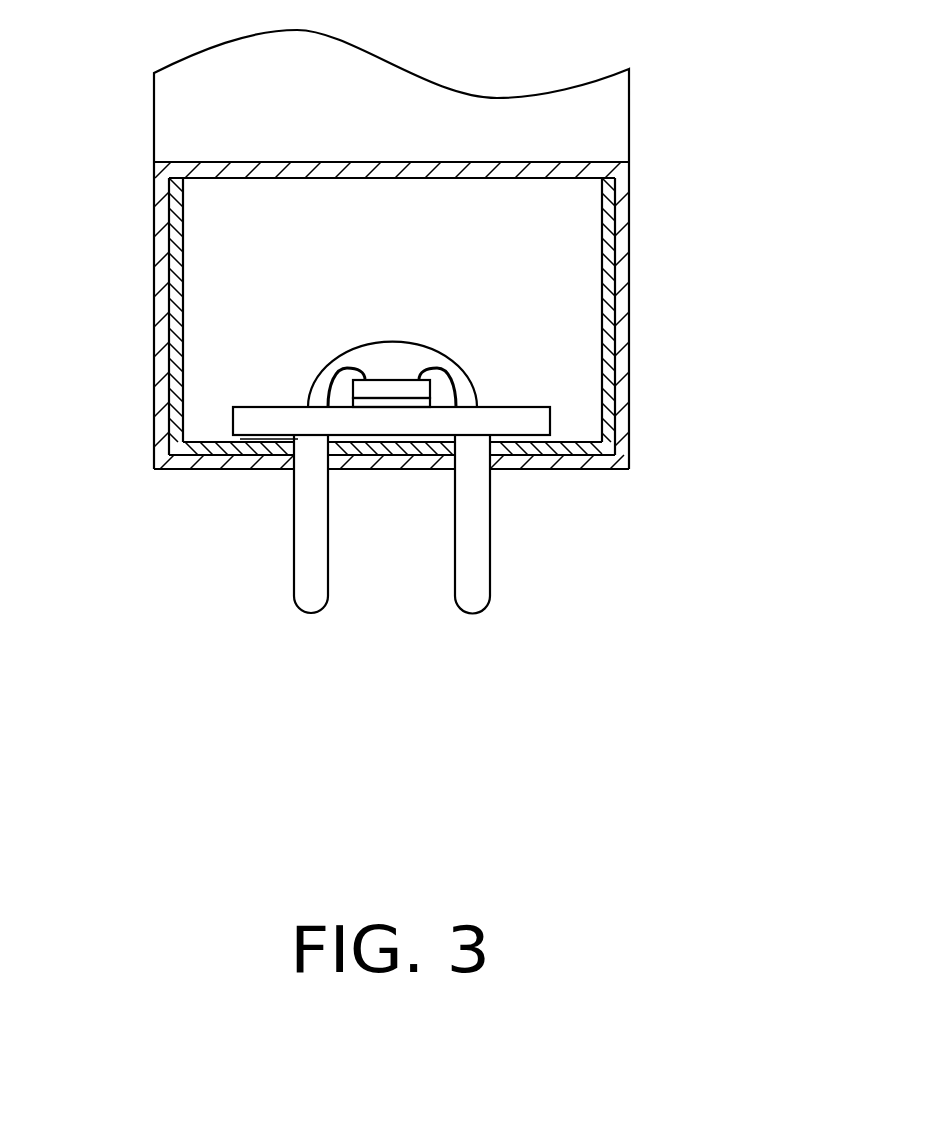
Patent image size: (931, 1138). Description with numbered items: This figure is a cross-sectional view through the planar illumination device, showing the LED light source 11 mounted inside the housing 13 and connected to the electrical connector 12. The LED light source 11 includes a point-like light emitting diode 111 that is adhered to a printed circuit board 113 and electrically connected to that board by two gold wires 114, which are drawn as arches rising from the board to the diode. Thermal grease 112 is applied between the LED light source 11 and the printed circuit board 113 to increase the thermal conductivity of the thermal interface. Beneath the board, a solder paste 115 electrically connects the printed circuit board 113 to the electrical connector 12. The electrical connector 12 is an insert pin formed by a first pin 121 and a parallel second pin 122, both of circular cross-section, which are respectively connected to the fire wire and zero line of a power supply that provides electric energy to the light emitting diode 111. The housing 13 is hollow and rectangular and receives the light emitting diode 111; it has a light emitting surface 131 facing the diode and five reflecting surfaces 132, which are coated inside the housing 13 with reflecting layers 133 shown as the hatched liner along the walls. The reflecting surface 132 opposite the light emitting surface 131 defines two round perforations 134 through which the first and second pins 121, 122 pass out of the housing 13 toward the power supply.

The LED light source 11 is at (515, 375).
The light emitting diode 111 is at (362, 393).
The thermal grease 112 is at (357, 402).
The printed circuit board 113 is at (252, 422).
The gold wires 114 is at (347, 370).
The solder paste 115 is at (250, 440).
The electrical connector 12 is at (453, 697).
The first pin 121 is at (472, 582).
The second pin 122 is at (310, 582).
The housing 13 is at (632, 243).
The light emitting surface 131 is at (556, 161).
The reflecting surfaces 132 is at (623, 407).
The reflecting layers 133 is at (620, 190).
The round perforations 134 is at (495, 458).